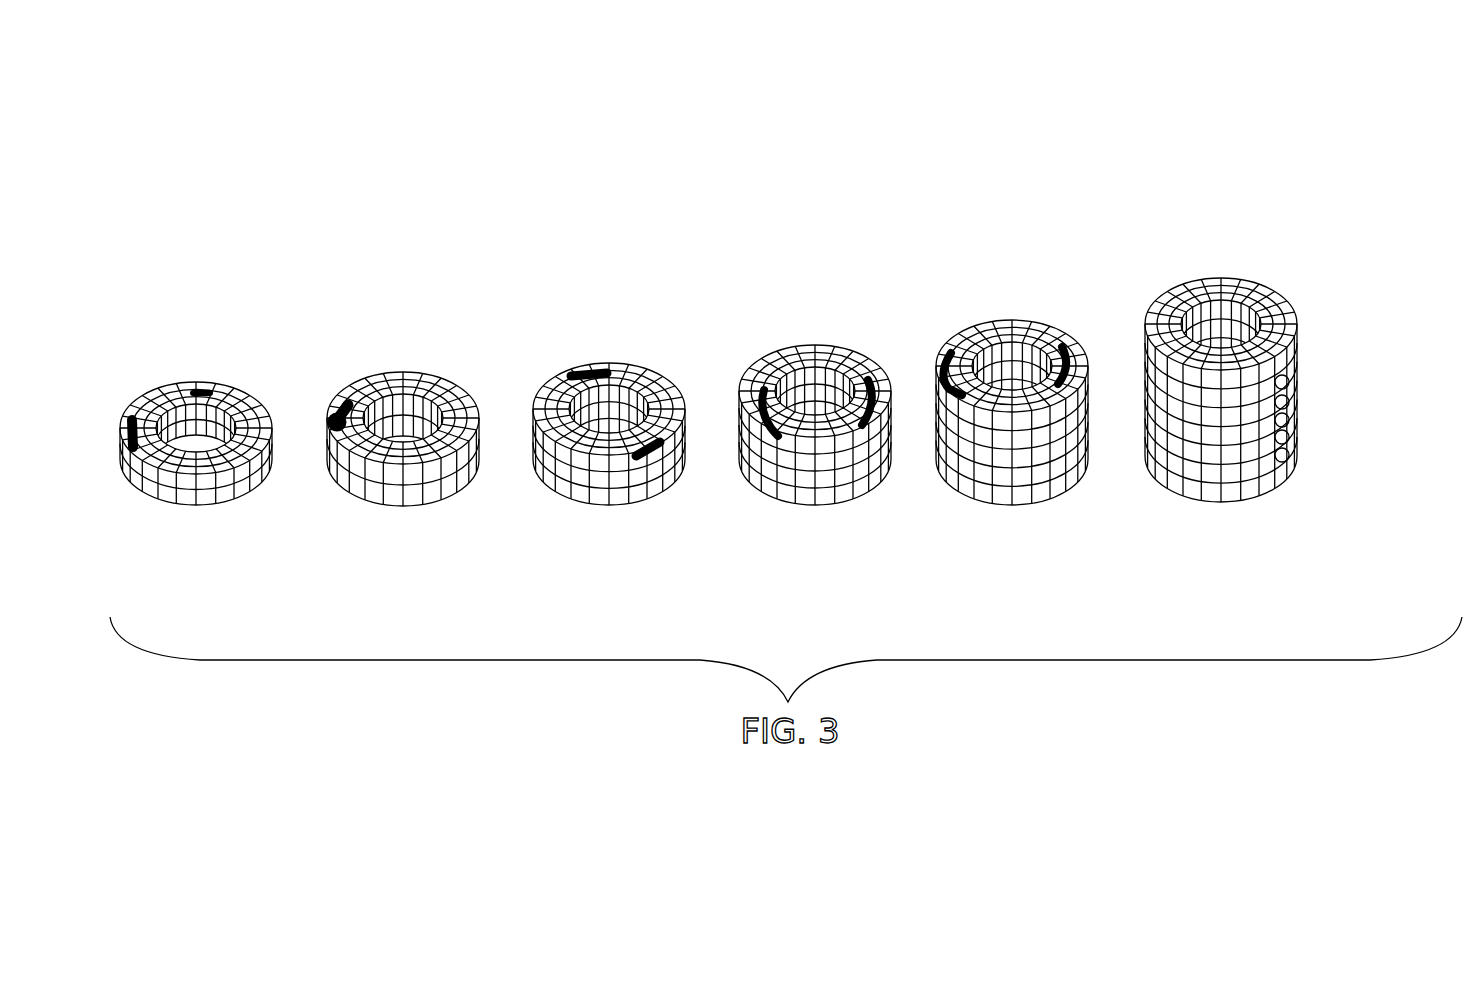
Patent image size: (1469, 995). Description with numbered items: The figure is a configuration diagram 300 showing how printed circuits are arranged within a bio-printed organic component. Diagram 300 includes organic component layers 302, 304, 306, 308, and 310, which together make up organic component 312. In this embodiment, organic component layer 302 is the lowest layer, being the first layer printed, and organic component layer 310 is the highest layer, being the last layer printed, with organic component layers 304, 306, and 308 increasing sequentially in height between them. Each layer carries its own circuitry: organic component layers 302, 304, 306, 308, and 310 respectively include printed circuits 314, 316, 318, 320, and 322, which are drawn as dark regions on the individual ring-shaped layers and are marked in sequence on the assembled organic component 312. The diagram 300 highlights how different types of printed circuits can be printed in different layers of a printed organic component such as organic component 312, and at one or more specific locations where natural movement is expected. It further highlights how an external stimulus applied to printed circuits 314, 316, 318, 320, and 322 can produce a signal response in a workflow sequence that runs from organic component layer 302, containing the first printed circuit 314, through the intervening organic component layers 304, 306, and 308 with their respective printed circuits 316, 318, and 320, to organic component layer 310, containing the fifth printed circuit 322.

The diagram 300 is at (376, 118).
The organic component layer 302 is at (213, 506).
The organic component layer 304 is at (408, 506).
The organic component layer 306 is at (627, 506).
The organic component layer 308 is at (832, 506).
The organic component layer 310 is at (1018, 506).
The organic component 312 is at (1220, 512).
The printed circuits 314 is at (1346, 523).
The printed circuits 316 is at (1362, 436).
The printed circuits 318 is at (1362, 392).
The printed circuits 320 is at (1362, 287).
The printed circuits 322 is at (1289, 379).